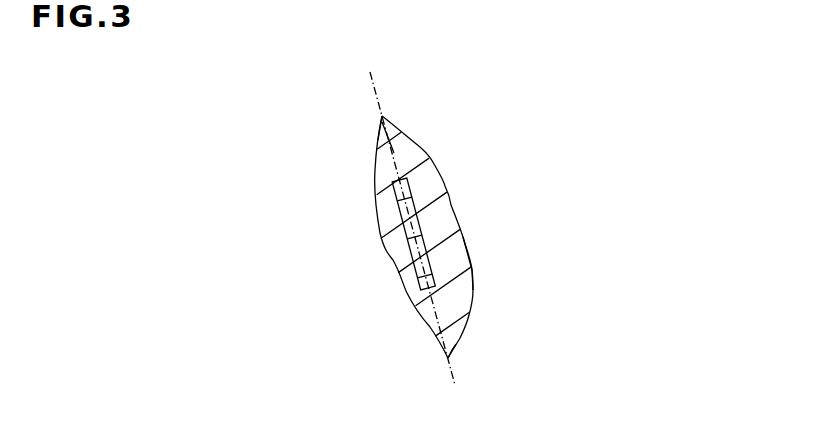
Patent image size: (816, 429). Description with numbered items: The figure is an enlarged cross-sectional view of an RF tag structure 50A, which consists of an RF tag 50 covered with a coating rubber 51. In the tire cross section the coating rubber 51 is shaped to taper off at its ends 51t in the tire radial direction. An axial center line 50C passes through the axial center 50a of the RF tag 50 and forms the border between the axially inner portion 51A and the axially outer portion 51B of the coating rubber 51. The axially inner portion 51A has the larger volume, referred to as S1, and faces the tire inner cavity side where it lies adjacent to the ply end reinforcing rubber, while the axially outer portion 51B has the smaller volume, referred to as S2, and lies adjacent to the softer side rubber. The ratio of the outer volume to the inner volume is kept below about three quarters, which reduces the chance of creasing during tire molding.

The axial center line 50C is at (373, 82).
The coating rubber 51 is at (427, 185).
The axially inner portion of the coating rubber 51A is at (440, 217).
The axially outer portion of the coating rubber 51B is at (378, 213).
The end of the coating rubber 51t is at (381, 138).
The RF tag 50 is at (413, 222).
The axial center of the RF tag 50a is at (412, 247).
The RF tag structure 50A is at (475, 275).